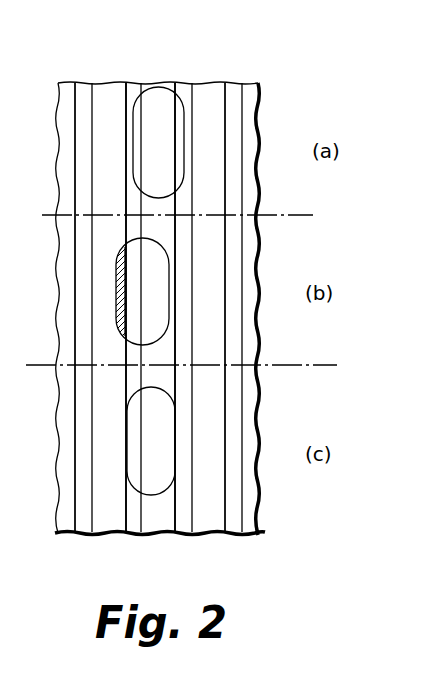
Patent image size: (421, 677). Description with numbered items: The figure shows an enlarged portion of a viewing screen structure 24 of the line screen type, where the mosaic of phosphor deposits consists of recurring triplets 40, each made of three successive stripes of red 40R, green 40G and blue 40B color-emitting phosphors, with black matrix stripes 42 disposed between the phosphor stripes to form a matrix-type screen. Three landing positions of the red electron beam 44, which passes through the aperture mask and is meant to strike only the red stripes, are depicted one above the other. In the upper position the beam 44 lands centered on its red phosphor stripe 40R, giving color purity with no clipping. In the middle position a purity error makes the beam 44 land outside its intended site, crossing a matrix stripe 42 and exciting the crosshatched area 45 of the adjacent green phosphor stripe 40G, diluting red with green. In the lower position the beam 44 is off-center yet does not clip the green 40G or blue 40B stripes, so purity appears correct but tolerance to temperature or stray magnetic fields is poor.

The viewing screen structure 24 is at (258, 89).
The triplet of phosphor stripes 40 is at (252, 45).
The green phosphor stripe 40G is at (104, 84).
The red phosphor stripe 40R is at (152, 81).
The blue phosphor stripe 40B is at (210, 85).
The black stripes 42 is at (80, 525).
The electron beam 44 is at (167, 147).
The crosshatched area 45 is at (118, 290).